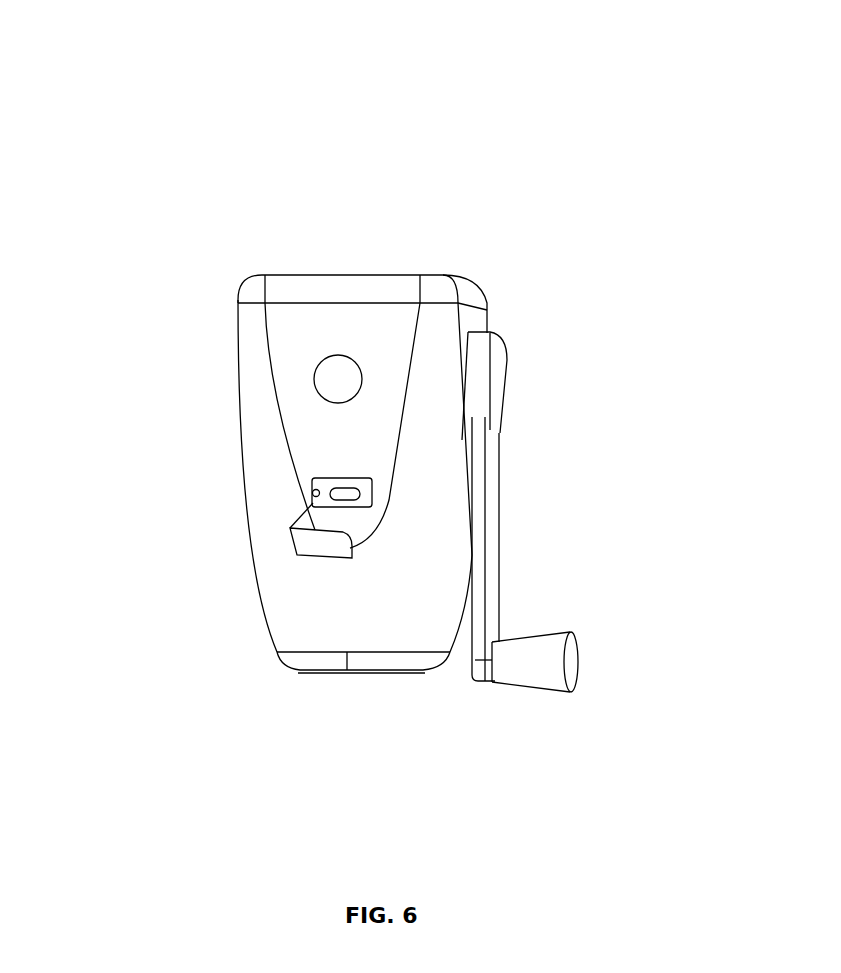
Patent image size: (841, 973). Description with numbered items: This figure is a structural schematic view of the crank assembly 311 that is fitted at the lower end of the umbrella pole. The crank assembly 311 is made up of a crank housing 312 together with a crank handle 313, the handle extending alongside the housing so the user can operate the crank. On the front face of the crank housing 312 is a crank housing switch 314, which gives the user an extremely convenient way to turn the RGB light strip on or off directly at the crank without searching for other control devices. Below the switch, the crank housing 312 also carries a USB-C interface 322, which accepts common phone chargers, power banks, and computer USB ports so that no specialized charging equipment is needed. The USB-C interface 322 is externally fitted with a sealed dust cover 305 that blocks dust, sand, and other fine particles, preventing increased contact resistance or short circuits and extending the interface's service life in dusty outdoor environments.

The crank assembly 311 is at (262, 208).
The crank housing 312 is at (293, 340).
The crank housing switch 314 is at (348, 381).
The USB-C interface 322 is at (362, 487).
The dust cover 305 is at (318, 543).
The crank handle 313 is at (515, 650).